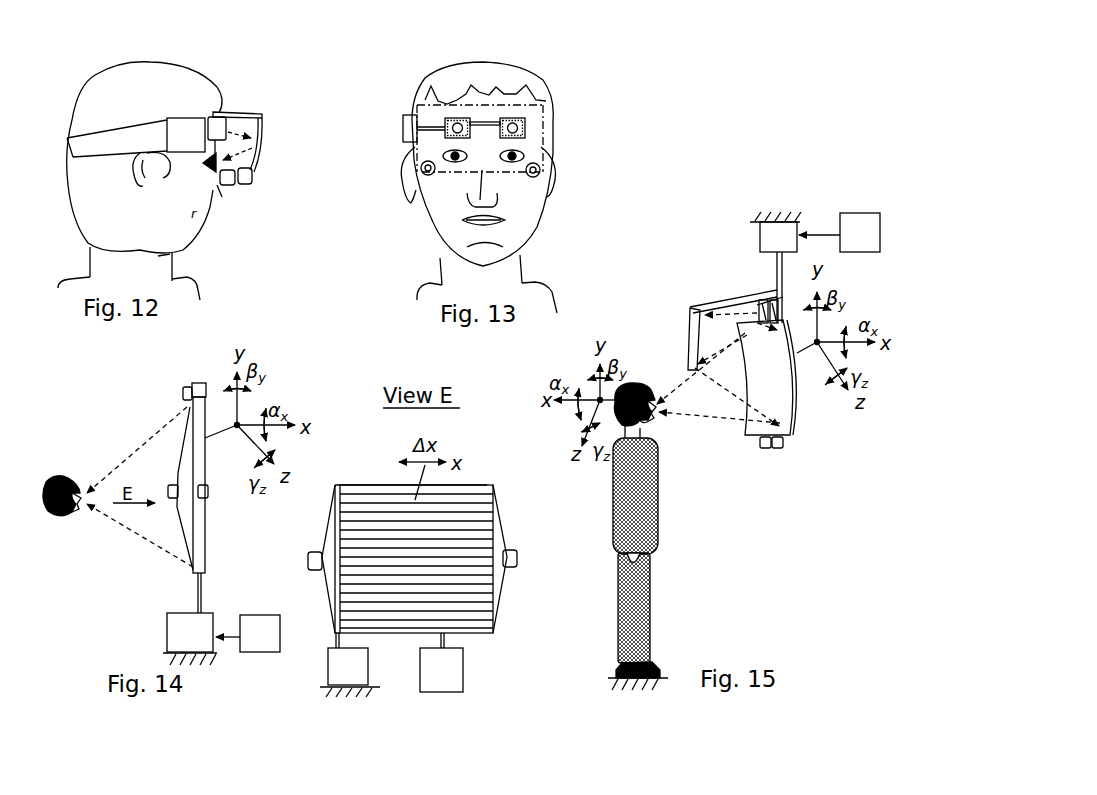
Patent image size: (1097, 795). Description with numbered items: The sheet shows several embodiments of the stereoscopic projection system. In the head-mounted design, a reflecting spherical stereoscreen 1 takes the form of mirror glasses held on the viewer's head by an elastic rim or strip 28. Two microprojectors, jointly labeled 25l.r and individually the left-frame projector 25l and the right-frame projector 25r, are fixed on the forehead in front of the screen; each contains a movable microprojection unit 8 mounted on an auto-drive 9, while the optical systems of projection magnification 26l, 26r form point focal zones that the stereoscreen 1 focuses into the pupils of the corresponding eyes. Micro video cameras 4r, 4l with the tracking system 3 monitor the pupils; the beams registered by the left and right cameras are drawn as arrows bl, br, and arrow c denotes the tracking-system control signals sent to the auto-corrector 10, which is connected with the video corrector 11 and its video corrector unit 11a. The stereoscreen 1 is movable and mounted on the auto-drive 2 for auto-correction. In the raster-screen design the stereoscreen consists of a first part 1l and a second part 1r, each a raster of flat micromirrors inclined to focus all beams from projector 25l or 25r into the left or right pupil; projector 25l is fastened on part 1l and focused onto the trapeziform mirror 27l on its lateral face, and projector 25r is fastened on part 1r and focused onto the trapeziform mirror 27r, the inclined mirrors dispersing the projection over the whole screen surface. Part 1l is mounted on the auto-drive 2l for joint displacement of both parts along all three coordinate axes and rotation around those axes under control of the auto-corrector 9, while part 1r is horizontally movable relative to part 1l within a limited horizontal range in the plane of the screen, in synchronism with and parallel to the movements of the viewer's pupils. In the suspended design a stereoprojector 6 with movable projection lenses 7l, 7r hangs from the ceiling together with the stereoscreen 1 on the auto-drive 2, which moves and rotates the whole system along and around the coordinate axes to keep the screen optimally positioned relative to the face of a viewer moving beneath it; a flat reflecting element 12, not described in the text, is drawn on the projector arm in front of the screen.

In FIG. 12, the stereoscreen 1 is at (247, 128).
In FIG. 13, the stereoscreen 1 is at (508, 173).
In FIG. 15, the stereoscreen 1 is at (787, 397).
In FIG. 14, the first part of the stereoscreen 1l is at (300, 535).
In FIG. 14, the second part of the stereoscreen 1r is at (192, 540).
In FIG. 12, the auto-drive 2 is at (186, 135).
In FIG. 13, the auto-drive 2 is at (403, 127).
In FIG. 14, the auto-drive 2 is at (271, 635).
In FIG. 15, the auto-drive 2 is at (778, 272).
In FIG. 14, the auto-drive of the stereoscreen part 1l 2l is at (441, 662).
In FIG. 12, the tracking system 3 is at (253, 175).
In FIG. 15, the tracking system 3 is at (784, 446).
In FIG. 12, the left video camera 4l is at (228, 186).
In FIG. 13, the left video camera 4l is at (540, 172).
In FIG. 15, the left video camera 4l is at (765, 449).
In FIG. 12, the right video camera 4r is at (252, 184).
In FIG. 13, the right video camera 4r is at (423, 172).
In FIG. 15, the right video camera 4r is at (778, 449).
In FIG. 15, the stereoprojector 6 is at (733, 255).
In FIG. 15, the left projection lens 7l is at (763, 303).
In FIG. 15, the right projection lens 7r is at (763, 300).
In FIG. 13, the microprojection unit 8 is at (565, 81).
In FIG. 15, the microprojection unit 8 is at (767, 305).
In FIG. 13, the auto-drive 9 is at (565, 81).
In FIG. 14, the auto-drive 9 is at (248, 633).
In FIG. 15, the auto-drive 9 is at (839, 232).
In FIG. 13, the auto-corrector 10 is at (480, 81).
In FIG. 13, the video corrector 11 is at (480, 81).
In FIG. 13, the video corrector unit 11a is at (565, 81).
In FIG. 15, the mirror 12 is at (695, 343).
In FIG. 13, the left projector 25l is at (480, 81).
In FIG. 14, the left projector 25l is at (358, 539).
In FIG. 13, the right projector 25r is at (635, 108).
In FIG. 14, the right projector 25r is at (207, 497).
In FIG. 12, the left and right projectors 25l.r is at (218, 130).
In FIG. 13, the optical system of projection magnification (left) 26l is at (457, 126).
In FIG. 13, the optical system of projection magnification (right) 26r is at (523, 120).
In FIG. 14, the trapeziform mirror 27l is at (503, 593).
In FIG. 14, the trapeziform mirror 27r is at (187, 468).
In FIG. 12, the elastic rim or strip 28 is at (110, 141).
In FIG. 14, the beams registered by the left video camera bl is at (152, 394).
In FIG. 15, the beams registered by the left video camera bl is at (723, 456).
In FIG. 14, the beams registered by the right video camera br is at (176, 402).
In FIG. 15, the beams registered by the right video camera br is at (751, 443).
In FIG. 15, the control signals of the tracking system c is at (786, 443).